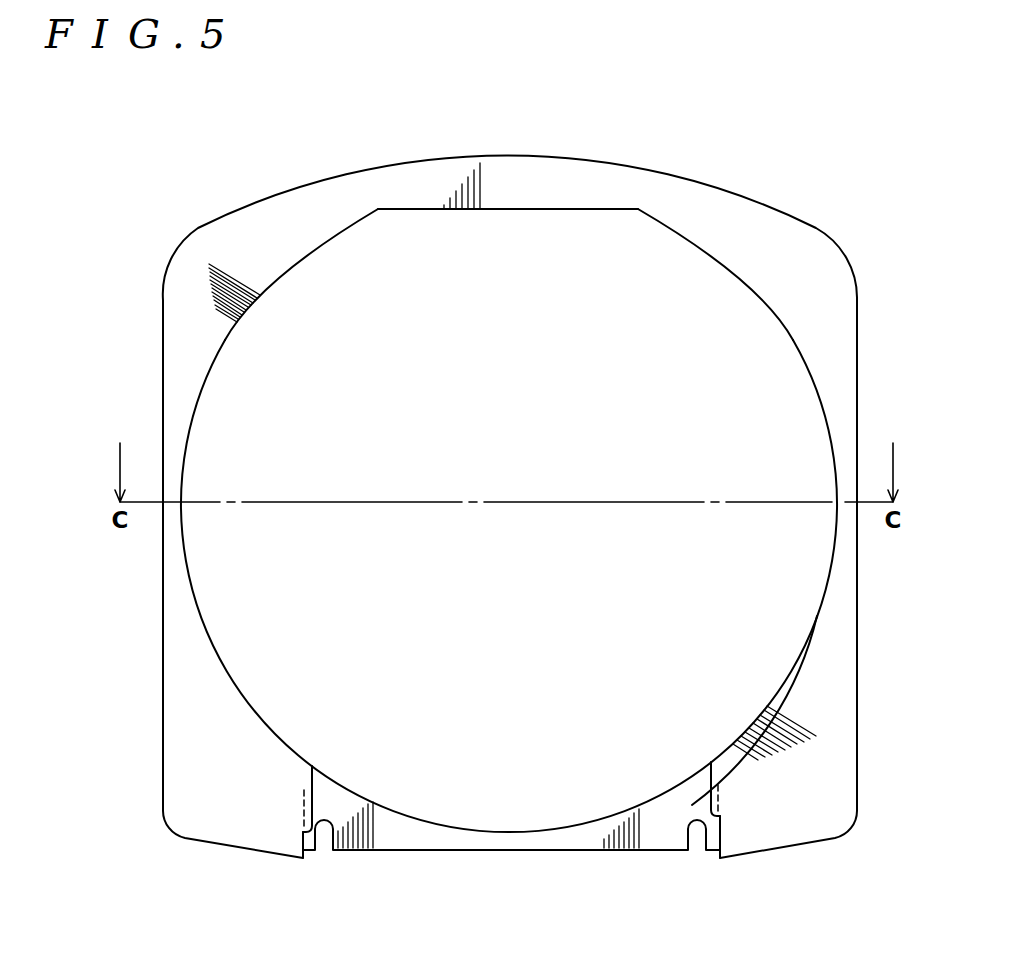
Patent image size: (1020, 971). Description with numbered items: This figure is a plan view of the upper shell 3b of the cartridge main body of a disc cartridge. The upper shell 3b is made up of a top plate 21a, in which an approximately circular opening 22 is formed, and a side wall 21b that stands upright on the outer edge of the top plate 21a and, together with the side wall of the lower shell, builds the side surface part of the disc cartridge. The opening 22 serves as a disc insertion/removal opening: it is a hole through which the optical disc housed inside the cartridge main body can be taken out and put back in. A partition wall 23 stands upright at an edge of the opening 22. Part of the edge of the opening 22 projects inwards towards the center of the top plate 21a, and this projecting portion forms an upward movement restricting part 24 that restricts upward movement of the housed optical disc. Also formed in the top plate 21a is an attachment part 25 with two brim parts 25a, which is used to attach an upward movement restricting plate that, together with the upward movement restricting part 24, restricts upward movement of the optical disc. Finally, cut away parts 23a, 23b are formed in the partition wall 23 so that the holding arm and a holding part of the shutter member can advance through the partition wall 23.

The upper shell 3b is at (512, 137).
The top plate 21a is at (753, 232).
The side wall 21b is at (789, 845).
The opening 22 is at (288, 323).
The partition wall 23 is at (196, 588).
The cut away part 23a is at (344, 249).
The cut away part 23b is at (719, 740).
The upward movement restricting part 24 is at (504, 198).
The attachment part 25 is at (455, 833).
The brim part 25a is at (709, 798).